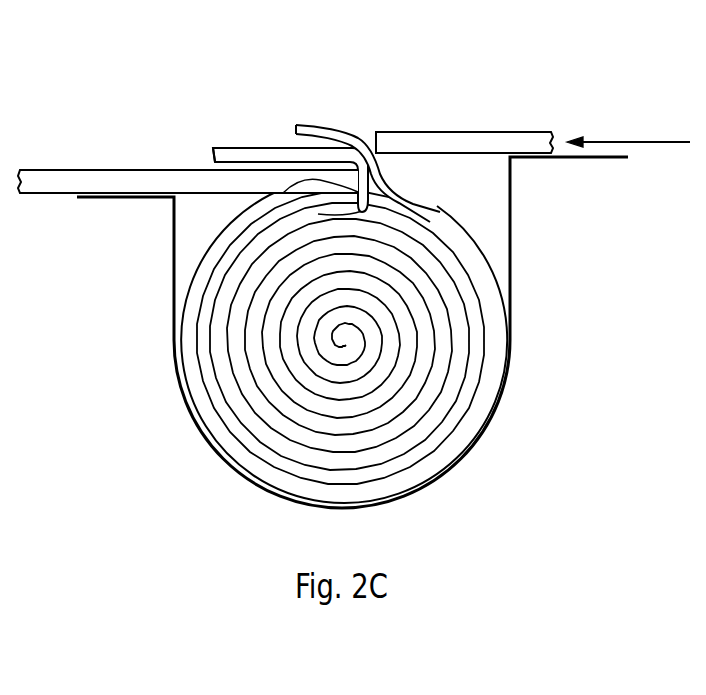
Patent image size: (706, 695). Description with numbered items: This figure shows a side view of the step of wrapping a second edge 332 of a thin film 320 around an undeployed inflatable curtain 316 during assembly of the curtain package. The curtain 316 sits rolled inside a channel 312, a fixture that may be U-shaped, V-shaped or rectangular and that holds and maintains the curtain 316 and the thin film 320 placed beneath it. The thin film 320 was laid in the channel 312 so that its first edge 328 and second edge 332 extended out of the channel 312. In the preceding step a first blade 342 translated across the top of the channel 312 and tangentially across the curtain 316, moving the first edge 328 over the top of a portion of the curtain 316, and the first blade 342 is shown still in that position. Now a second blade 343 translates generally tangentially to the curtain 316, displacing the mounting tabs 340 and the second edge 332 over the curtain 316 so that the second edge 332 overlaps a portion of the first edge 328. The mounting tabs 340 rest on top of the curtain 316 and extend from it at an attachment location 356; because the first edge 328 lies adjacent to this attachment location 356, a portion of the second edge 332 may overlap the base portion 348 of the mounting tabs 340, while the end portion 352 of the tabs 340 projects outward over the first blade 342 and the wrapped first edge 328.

The channel 312 is at (198, 433).
The undeployed inflatable curtain 316 is at (438, 435).
The thin film 320 is at (277, 492).
The first edge 328 is at (280, 198).
The second edge 332 is at (333, 127).
The mounting tabs 340 is at (262, 147).
The first blade 342 is at (138, 170).
The second blade 343 is at (493, 132).
The base portion 348 is at (377, 182).
The end portion 352 is at (220, 147).
The attachment location 356 is at (370, 212).